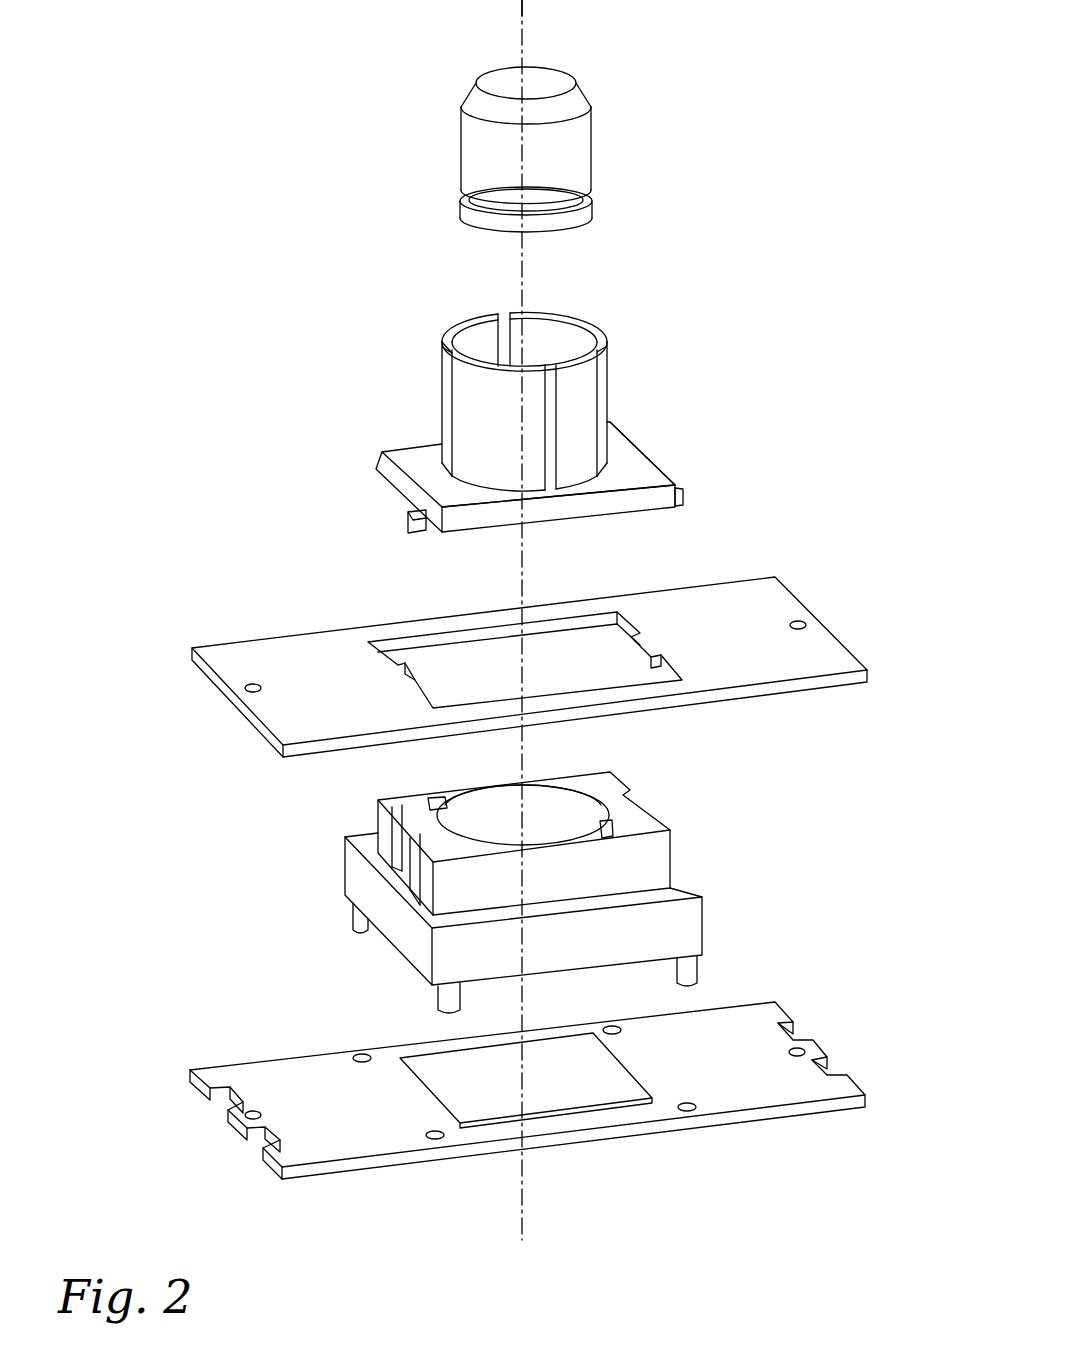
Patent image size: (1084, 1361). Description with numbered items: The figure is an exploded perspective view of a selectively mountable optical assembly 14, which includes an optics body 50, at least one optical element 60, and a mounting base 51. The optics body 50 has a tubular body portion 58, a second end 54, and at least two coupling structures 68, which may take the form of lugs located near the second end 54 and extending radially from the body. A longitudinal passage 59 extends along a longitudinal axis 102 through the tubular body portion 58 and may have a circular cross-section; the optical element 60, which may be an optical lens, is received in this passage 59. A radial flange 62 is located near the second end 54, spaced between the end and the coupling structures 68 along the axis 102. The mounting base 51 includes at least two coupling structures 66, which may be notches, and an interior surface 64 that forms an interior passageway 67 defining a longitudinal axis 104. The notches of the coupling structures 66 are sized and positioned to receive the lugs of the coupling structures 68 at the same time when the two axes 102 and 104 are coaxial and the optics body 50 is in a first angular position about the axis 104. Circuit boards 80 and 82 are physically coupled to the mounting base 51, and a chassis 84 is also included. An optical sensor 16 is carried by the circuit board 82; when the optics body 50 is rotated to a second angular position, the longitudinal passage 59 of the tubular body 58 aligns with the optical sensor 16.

The selectively mountable optical assembly 14 is at (204, 74).
The longitudinal axis 102 is at (520, 3).
The longitudinal axis 104 is at (520, 32).
The optical element 60 is at (556, 78).
The longitudinal passage 59 is at (486, 338).
The tubular body portion 58 is at (465, 403).
The optics body 50 is at (555, 436).
The radial flange 62 is at (638, 465).
The coupling structures 68 is at (684, 497).
The second end 54 is at (598, 521).
The circuit board 80 is at (724, 605).
The interior passageway 67 is at (483, 812).
The interior surface 64 is at (550, 824).
The coupling structures 66 is at (432, 800).
The mounting base 51 is at (575, 873).
The chassis 84 is at (350, 868).
The circuit board 82 is at (752, 1018).
The optical sensor 16 is at (572, 1087).